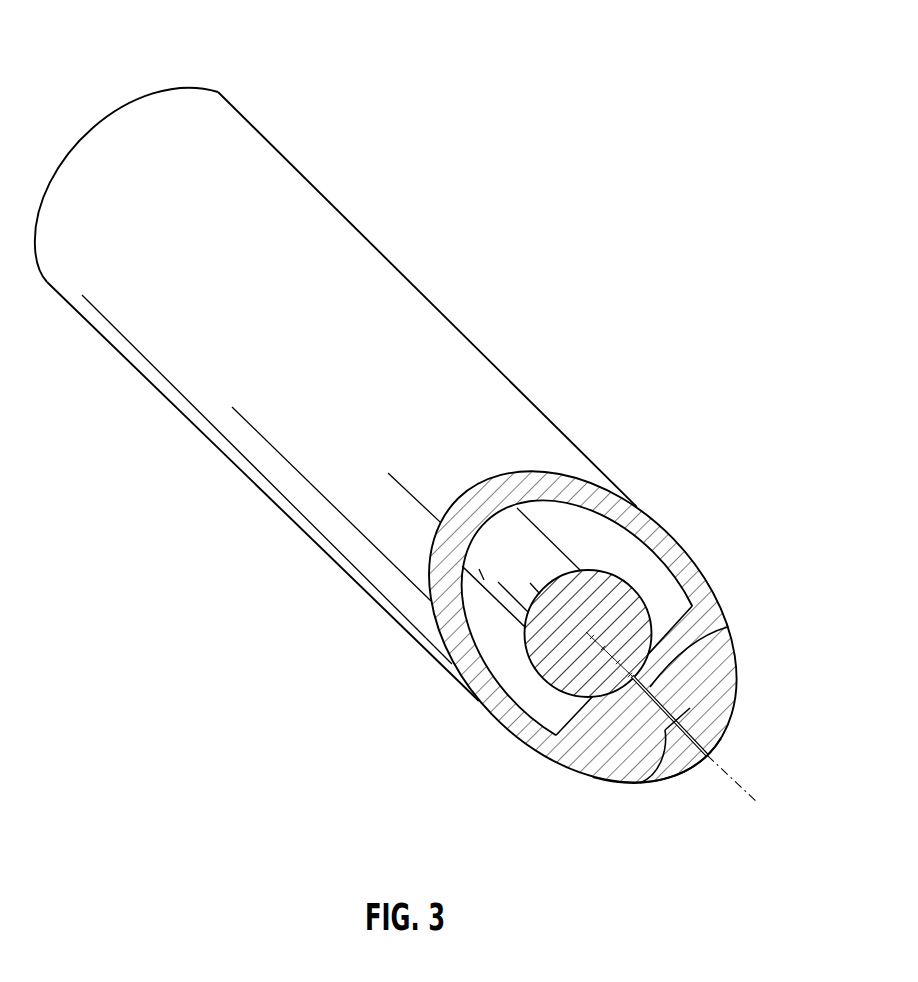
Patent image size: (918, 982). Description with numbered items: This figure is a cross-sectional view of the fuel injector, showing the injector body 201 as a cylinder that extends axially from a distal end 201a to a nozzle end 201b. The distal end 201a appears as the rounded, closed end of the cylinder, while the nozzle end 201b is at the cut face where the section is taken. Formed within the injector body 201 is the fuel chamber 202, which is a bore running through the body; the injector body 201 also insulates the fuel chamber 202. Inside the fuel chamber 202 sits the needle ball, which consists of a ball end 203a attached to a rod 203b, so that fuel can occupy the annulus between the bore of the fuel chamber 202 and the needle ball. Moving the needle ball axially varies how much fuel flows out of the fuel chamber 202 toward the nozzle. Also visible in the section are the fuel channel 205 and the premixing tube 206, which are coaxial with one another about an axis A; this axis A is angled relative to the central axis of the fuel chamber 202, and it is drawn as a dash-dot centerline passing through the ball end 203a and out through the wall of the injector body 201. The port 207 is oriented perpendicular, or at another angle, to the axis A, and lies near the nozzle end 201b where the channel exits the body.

The injector body 201 is at (579, 479).
The distal end 201a is at (219, 92).
The nozzle end 201b is at (691, 768).
The fuel chamber 202 is at (513, 668).
The ball end 203a is at (623, 578).
The rod 203b is at (462, 578).
The fuel channel 205 is at (728, 627).
The premixing tube 206 is at (734, 707).
The port 207 is at (642, 783).
The axis A is at (684, 732).